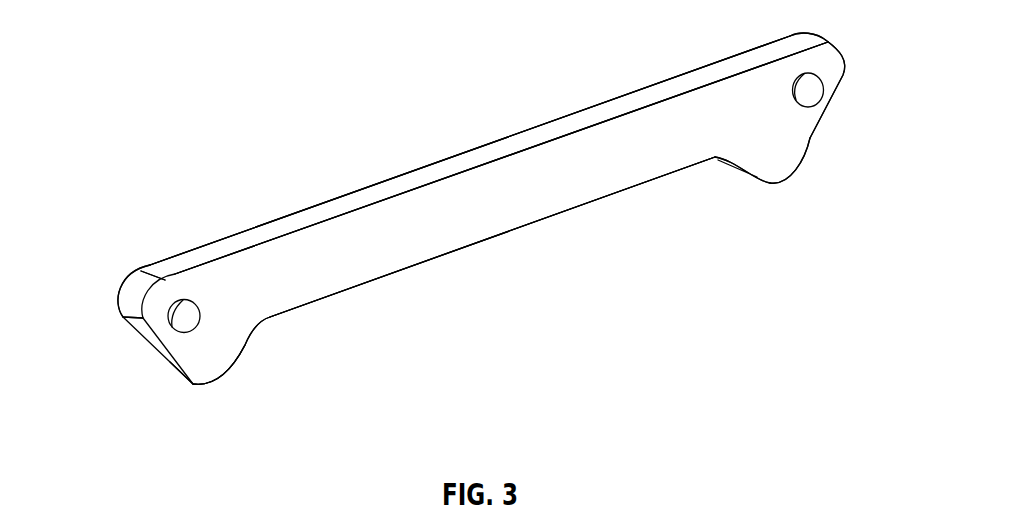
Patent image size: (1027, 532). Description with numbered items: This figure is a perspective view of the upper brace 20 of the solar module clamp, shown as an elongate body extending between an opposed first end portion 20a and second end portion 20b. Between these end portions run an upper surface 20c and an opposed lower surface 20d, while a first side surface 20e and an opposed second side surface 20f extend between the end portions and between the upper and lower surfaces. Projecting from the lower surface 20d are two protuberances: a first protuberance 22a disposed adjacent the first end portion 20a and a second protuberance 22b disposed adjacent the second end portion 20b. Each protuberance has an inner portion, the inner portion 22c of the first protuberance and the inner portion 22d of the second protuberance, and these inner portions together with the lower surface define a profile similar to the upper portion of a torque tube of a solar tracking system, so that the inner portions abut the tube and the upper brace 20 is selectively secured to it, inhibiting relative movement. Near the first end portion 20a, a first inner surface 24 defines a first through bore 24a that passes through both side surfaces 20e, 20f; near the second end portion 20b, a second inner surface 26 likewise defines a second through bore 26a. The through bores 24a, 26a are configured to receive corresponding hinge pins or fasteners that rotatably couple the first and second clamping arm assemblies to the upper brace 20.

The upper brace 20 is at (154, 134).
The first end portion 20a is at (112, 291).
The second end portion 20b is at (848, 35).
The upper surface 20c is at (357, 203).
The lower surface 20d is at (540, 222).
The first side surface 20e is at (502, 187).
The second side surface 20f is at (622, 93).
The first protuberance 22a is at (205, 388).
The second protuberance 22b is at (772, 186).
The inner portion of first protuberance 22c is at (248, 348).
The inner portion of second protuberance 22d is at (722, 163).
The first inner surface 24 is at (198, 298).
The first through bore 24a is at (175, 334).
The second inner surface 26 is at (823, 87).
The second through bore 26a is at (799, 118).